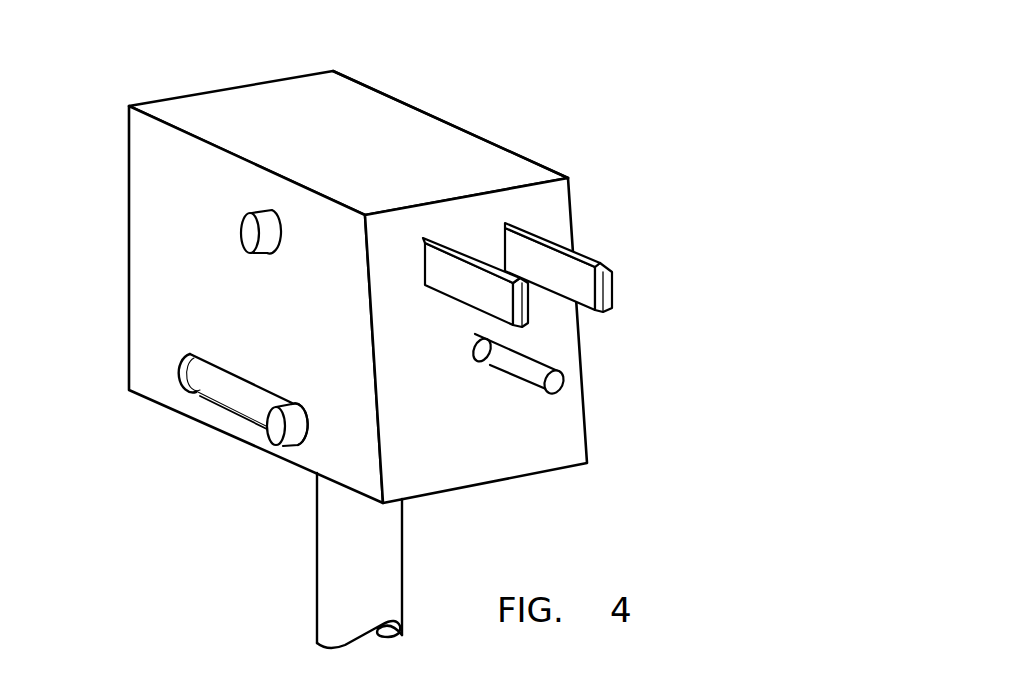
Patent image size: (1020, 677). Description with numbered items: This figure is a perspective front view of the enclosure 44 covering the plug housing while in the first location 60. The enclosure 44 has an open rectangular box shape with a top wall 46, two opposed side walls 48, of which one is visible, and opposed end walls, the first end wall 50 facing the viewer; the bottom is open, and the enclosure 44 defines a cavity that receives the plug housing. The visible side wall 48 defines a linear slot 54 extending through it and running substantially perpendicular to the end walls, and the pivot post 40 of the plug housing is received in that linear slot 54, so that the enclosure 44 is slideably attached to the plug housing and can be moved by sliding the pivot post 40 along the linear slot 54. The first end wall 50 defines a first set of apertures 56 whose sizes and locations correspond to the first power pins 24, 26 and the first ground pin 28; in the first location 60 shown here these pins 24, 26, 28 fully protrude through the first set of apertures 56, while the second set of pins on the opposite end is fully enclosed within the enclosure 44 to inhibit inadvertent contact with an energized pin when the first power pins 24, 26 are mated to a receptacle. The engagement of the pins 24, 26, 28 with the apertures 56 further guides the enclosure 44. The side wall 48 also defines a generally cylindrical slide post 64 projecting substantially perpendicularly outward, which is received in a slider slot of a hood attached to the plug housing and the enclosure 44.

The first power pin 24 is at (528, 308).
The first power pin 26 is at (590, 255).
The first ground pin 28 is at (555, 382).
The pivot post 40 is at (273, 425).
The enclosure 44 is at (397, 98).
The top wall 46 is at (282, 95).
The side wall 48 is at (150, 280).
The first end wall 50 is at (553, 448).
The linear slot 54 is at (213, 382).
The first set of apertures 56 is at (425, 237).
The first location 60 is at (299, 433).
The slide post 64 is at (240, 228).